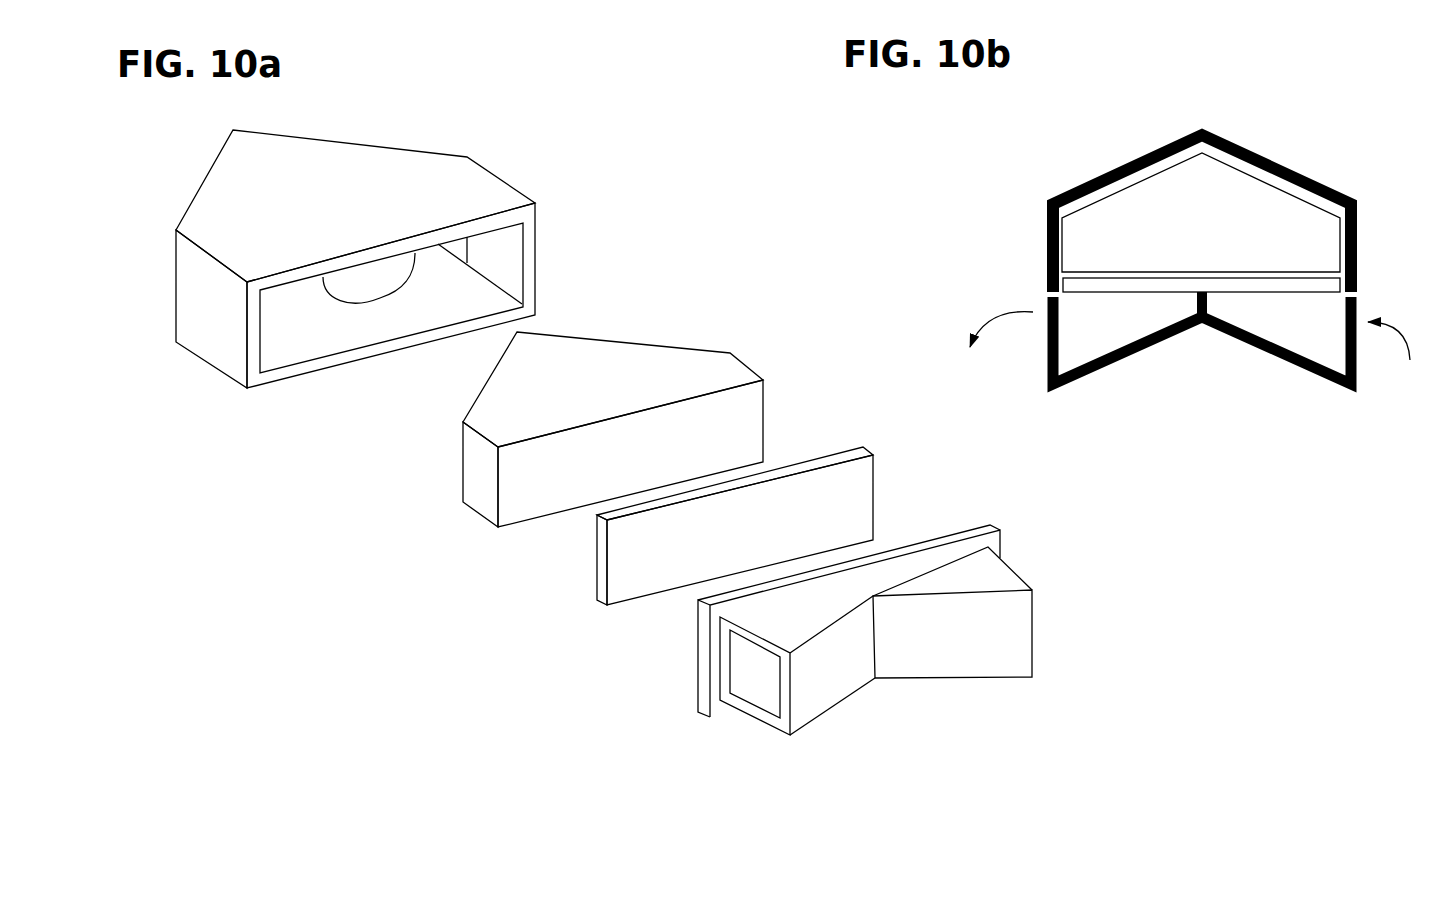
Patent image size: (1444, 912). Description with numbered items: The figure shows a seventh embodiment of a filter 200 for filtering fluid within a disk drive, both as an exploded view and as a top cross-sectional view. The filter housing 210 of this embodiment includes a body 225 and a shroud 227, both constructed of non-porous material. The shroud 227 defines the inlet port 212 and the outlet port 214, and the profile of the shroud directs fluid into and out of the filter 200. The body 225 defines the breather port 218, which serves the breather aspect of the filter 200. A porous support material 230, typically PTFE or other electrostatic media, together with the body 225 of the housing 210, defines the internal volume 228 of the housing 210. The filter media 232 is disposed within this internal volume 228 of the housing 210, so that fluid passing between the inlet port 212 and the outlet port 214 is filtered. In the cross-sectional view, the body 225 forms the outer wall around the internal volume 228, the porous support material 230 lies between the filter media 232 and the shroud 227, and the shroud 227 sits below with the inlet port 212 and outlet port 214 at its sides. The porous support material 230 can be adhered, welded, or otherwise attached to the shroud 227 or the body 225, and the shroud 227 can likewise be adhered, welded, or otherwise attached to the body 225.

In FIG. 10a, the filter 200 is at (516, 153).
In FIG. 10b, the filter 200 is at (1010, 187).
In FIG. 10b, the filter housing 210 is at (1107, 168).
In FIG. 10b, the inlet port 212 is at (1357, 357).
In FIG. 10a, the outlet port 214 is at (750, 678).
In FIG. 10b, the outlet port 214 is at (1043, 365).
In FIG. 10a, the breather port 218 is at (357, 293).
In FIG. 10a, the body 225 is at (208, 322).
In FIG. 10b, the body 225 is at (1265, 153).
In FIG. 10a, the shroud 227 is at (967, 575).
In FIG. 10b, the shroud 227 is at (1300, 368).
In FIG. 10b, the internal volume 228 is at (1080, 192).
In FIG. 10a, the porous support material 230 is at (600, 563).
In FIG. 10b, the porous support material 230 is at (1078, 285).
In FIG. 10a, the filter media 232 is at (480, 475).
In FIG. 10b, the filter media 232 is at (1305, 228).